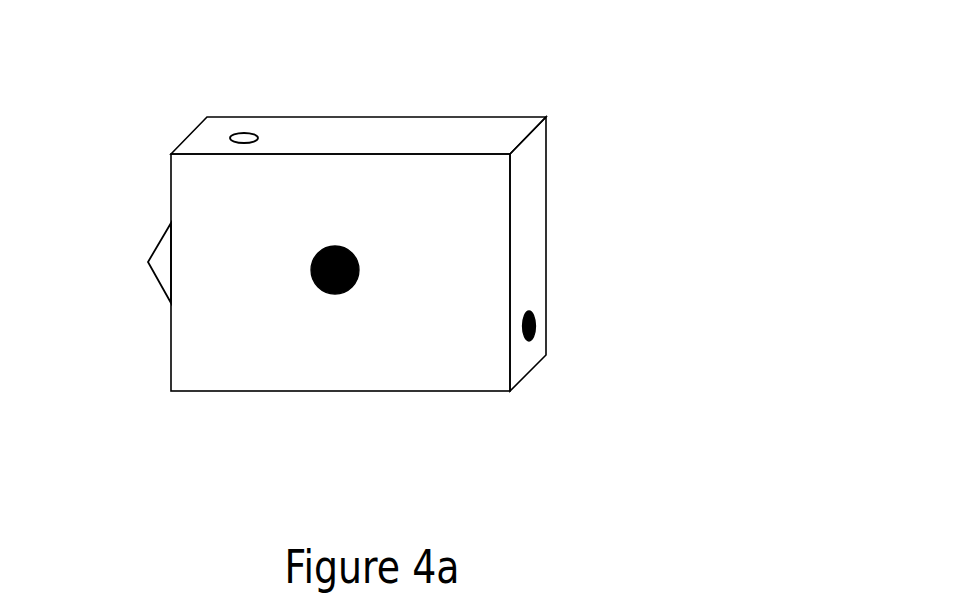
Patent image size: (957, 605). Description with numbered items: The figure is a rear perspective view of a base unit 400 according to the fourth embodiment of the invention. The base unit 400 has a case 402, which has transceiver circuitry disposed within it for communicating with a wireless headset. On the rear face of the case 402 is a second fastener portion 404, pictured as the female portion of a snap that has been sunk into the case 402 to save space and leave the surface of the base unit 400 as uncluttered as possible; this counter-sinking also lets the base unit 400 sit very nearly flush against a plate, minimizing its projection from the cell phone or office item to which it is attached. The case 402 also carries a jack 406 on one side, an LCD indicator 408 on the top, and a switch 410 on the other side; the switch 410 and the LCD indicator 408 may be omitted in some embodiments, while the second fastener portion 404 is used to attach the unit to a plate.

The base unit 400 is at (788, 214).
The case 402 is at (528, 182).
The second fastener portion 404 is at (356, 283).
The jack 406 is at (535, 326).
The LCD indicator 408 is at (243, 132).
The switch 410 is at (165, 288).